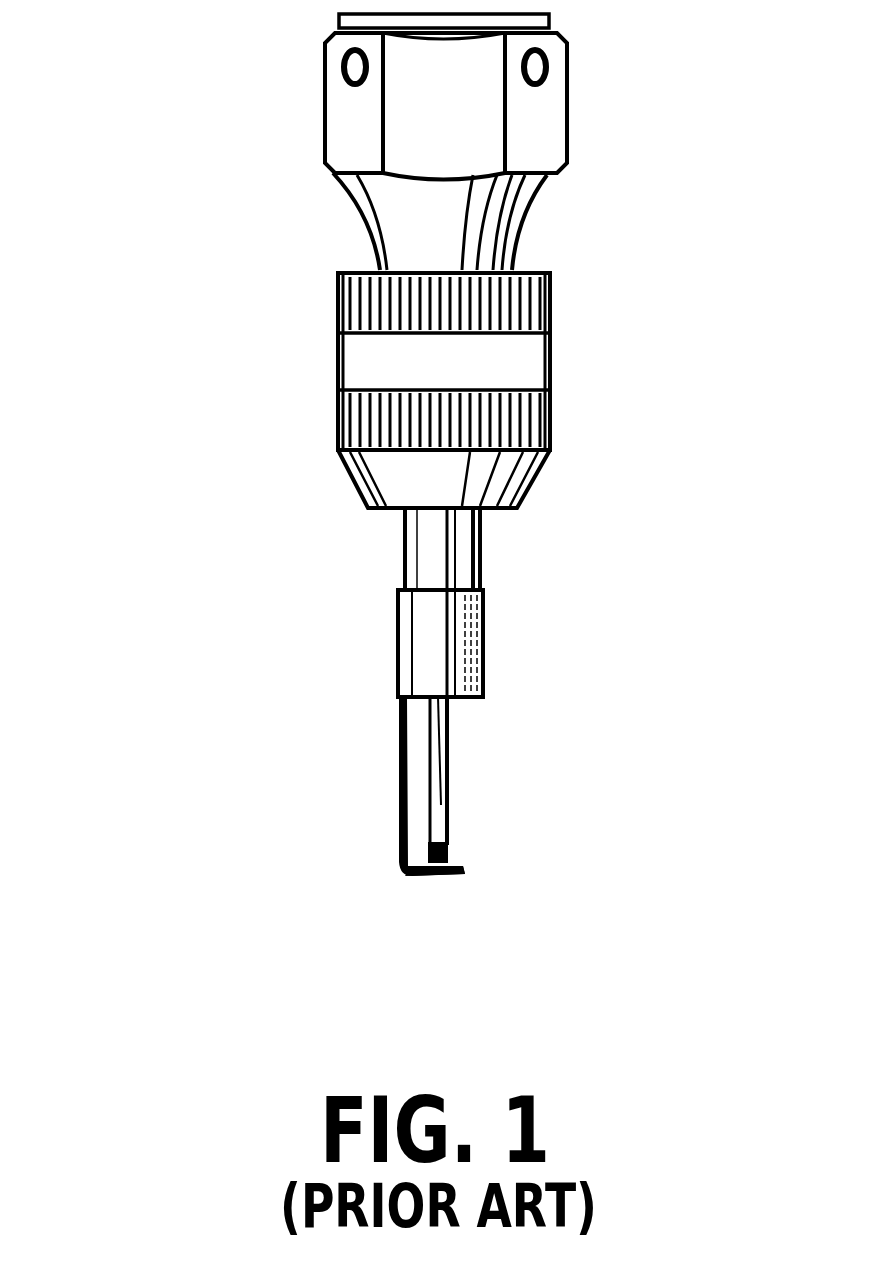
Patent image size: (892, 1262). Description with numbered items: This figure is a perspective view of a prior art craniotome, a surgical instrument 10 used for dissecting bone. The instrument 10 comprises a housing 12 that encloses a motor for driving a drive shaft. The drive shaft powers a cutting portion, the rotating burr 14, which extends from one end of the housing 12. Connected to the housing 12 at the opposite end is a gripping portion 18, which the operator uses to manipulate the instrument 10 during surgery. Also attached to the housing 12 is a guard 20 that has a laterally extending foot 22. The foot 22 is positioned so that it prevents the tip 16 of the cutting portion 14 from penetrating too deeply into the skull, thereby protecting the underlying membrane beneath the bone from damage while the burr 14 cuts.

The surgical instrument 10 is at (615, 228).
The housing 12 is at (337, 403).
The rotating burr 14 is at (450, 748).
The tip 16 is at (450, 855).
The gripping portion 18 is at (347, 130).
The guard 20 is at (395, 723).
The foot 22 is at (412, 880).